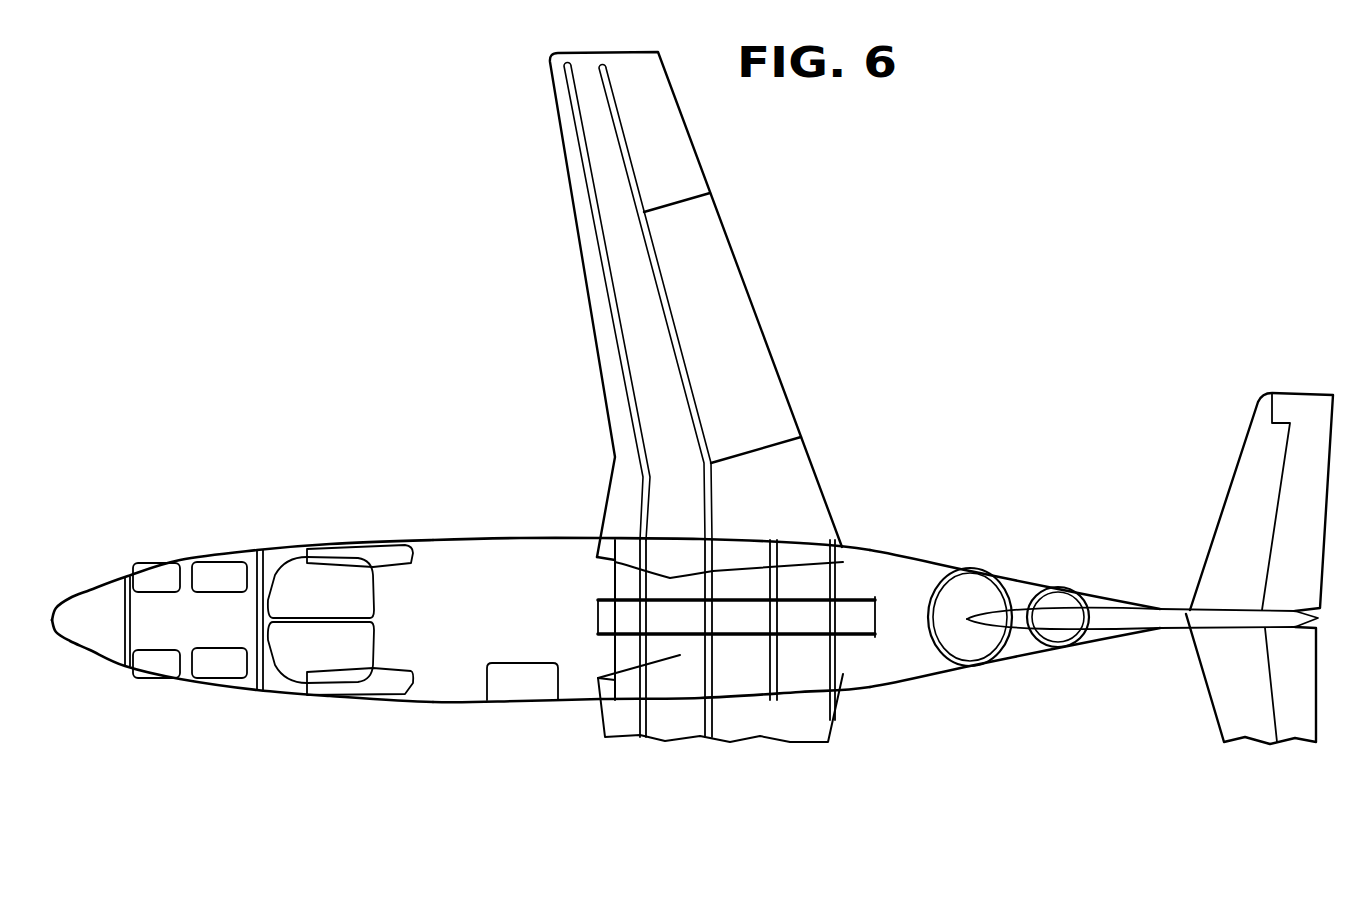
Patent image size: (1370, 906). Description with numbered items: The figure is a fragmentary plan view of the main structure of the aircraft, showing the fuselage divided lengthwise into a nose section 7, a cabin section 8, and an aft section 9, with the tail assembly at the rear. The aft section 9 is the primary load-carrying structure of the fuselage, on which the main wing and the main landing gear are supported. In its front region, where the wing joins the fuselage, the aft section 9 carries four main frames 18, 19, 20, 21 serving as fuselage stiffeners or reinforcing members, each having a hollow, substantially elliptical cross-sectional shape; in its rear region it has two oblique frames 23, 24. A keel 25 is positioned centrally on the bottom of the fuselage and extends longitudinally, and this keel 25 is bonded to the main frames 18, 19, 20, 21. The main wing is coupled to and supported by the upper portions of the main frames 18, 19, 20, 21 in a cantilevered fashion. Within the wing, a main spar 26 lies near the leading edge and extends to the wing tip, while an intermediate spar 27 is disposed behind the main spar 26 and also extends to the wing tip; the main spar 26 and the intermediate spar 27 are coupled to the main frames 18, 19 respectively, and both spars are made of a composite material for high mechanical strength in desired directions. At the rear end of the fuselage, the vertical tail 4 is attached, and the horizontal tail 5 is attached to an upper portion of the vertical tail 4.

The vertical tail 4 is at (1182, 610).
The horizontal tail 5 is at (1250, 487).
The nose section 7 is at (200, 695).
The cabin section 8 is at (456, 708).
The aft section 9 is at (948, 681).
The main frame 18 is at (843, 673).
The main frame 19 is at (708, 678).
The main frame 20 is at (768, 682).
The main frame 21 is at (827, 678).
The oblique frame 23 is at (993, 657).
The oblique frame 24 is at (1087, 650).
The keel 25 is at (855, 610).
The main spar 26 is at (618, 328).
The intermediate spar 27 is at (653, 257).